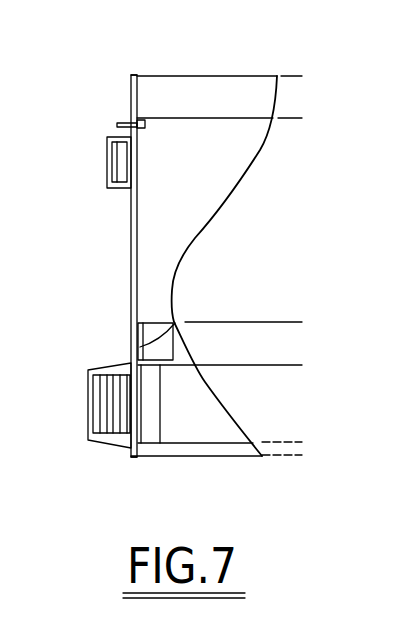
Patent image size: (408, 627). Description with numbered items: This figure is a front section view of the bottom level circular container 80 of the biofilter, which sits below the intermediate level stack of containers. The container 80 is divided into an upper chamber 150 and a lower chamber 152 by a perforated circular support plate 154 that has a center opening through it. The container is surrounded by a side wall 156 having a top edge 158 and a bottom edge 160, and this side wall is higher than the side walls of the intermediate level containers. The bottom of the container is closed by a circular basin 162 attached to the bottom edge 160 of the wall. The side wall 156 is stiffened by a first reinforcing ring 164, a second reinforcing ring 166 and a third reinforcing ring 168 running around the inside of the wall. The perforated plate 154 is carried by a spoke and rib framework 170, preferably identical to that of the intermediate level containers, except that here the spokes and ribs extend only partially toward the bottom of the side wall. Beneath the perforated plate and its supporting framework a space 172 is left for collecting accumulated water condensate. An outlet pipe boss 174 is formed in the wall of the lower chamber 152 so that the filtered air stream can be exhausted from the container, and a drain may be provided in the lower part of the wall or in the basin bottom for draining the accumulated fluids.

The bottom level circular container 80 is at (118, 267).
The upper chamber 150 is at (147, 197).
The lower chamber 152 is at (177, 390).
The perforated circular support plate 154 is at (150, 323).
The side wall 156 is at (131, 231).
The top edge 158 is at (132, 75).
The bottom edge 160 is at (132, 464).
The circular basin 162 is at (285, 448).
The first reinforcing ring 164 is at (183, 87).
The second reinforcing ring 166 is at (173, 322).
The spoke and rib framework 170 is at (178, 348).
The space 172 is at (213, 418).
The third reinforcing ring 168 is at (147, 433).
The outlet pipe boss 174 is at (88, 395).